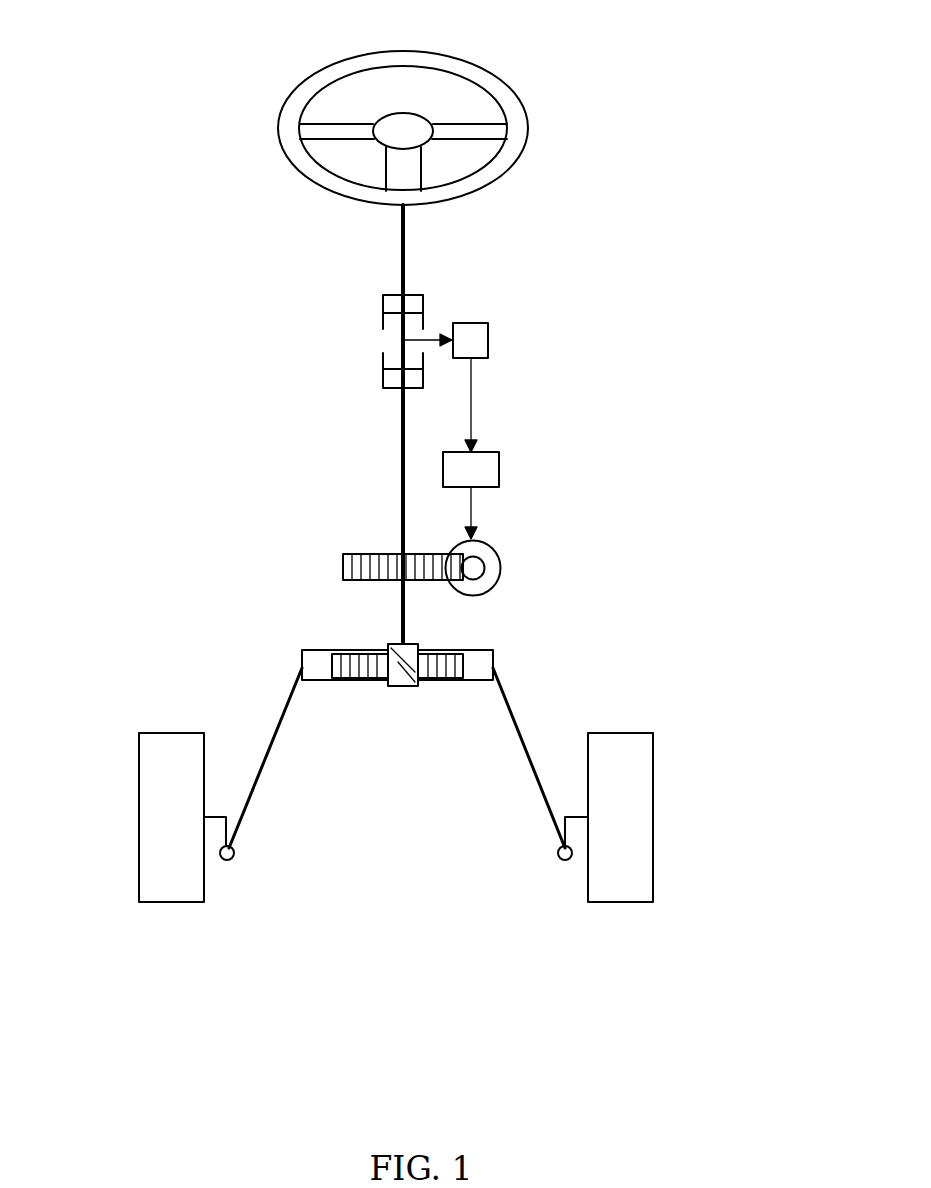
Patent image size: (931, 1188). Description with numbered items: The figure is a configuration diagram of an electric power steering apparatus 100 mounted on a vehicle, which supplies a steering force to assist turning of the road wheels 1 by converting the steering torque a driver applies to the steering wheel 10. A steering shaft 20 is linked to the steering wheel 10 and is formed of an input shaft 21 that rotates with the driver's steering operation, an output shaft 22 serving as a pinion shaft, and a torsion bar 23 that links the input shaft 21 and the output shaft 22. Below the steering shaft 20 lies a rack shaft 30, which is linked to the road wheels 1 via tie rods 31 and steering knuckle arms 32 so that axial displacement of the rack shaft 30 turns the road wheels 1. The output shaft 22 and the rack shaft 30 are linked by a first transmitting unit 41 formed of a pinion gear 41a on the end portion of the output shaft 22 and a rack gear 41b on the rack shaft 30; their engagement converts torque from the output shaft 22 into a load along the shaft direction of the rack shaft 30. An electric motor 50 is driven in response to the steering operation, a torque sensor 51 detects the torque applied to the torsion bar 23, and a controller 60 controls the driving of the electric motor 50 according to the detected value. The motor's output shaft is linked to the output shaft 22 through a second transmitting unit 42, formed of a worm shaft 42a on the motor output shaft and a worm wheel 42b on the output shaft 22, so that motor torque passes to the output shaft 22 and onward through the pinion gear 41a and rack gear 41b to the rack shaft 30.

The road wheel 1 is at (147, 785).
The steering wheel 10 is at (515, 115).
The steering shaft 20 is at (343, 425).
The input shaft 21 is at (403, 283).
The output shaft 22 is at (403, 410).
The torsion bar 23 is at (403, 348).
The rack shaft 30 is at (300, 655).
The tie rod 31 is at (262, 768).
The steering knuckle arm 32 is at (230, 826).
The first transmitting unit 41 is at (392, 734).
The pinion gear 41a is at (410, 688).
The rack gear 41b is at (358, 670).
The second transmitting unit 42 is at (493, 599).
The worm shaft 42a is at (478, 572).
The worm wheel 42b is at (462, 582).
The electric motor 50 is at (493, 557).
The torque sensor 51 is at (489, 340).
The controller 60 is at (497, 470).
The electric power steering apparatus 100 is at (702, 525).